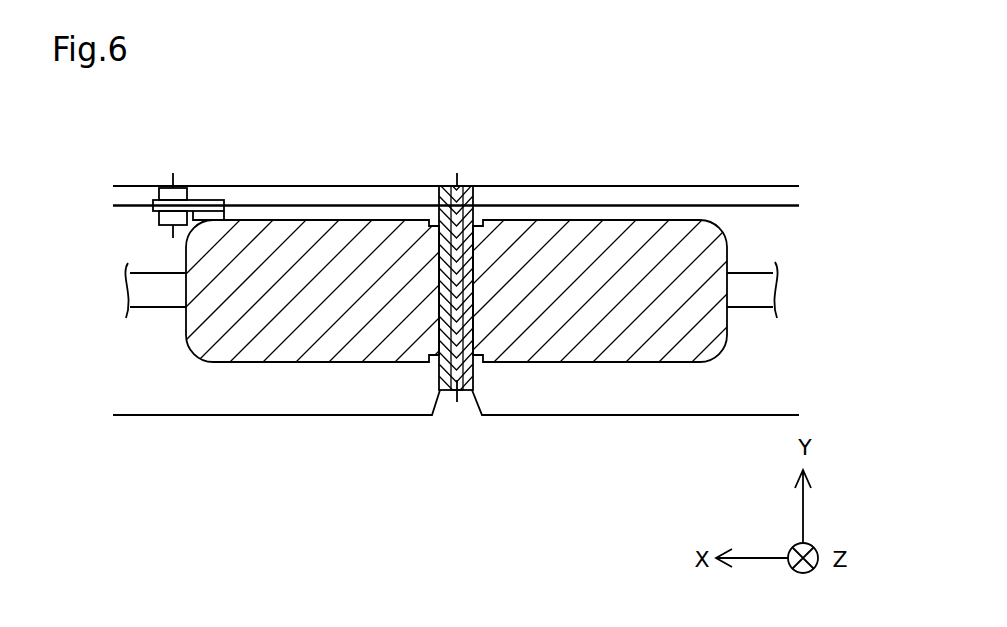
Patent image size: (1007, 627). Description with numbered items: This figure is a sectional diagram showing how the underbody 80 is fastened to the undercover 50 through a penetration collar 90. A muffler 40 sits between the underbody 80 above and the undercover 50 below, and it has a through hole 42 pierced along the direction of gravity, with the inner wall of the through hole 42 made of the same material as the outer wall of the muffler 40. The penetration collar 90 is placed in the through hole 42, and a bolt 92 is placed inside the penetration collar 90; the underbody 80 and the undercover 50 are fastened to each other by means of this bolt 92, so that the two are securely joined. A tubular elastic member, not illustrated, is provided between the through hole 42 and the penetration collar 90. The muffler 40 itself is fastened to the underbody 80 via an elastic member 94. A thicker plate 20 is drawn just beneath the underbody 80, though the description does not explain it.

The thick plate / substrate 20 is at (598, 203).
The muffler 40 is at (643, 218).
The through hole 42 is at (434, 242).
The undercover 50 is at (535, 416).
The underbody 80 is at (746, 185).
The penetration collar 90 is at (474, 212).
The bolt 92 is at (467, 185).
The elastic member 94 is at (168, 197).